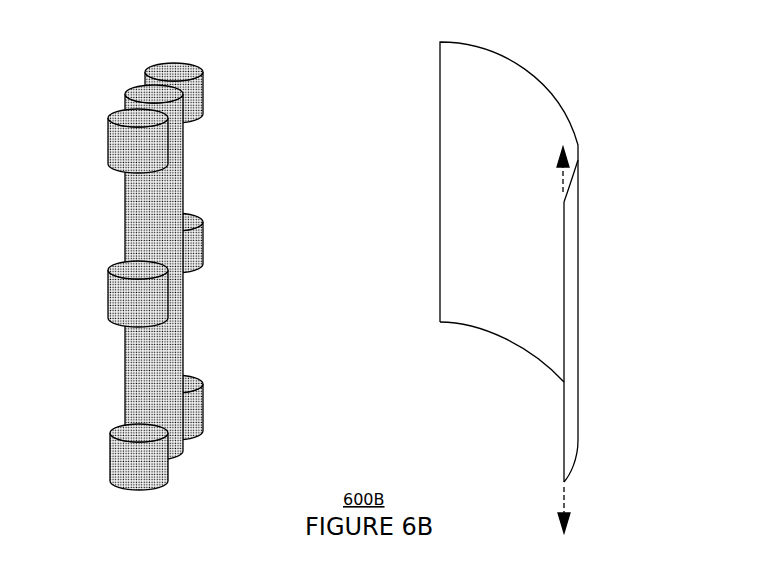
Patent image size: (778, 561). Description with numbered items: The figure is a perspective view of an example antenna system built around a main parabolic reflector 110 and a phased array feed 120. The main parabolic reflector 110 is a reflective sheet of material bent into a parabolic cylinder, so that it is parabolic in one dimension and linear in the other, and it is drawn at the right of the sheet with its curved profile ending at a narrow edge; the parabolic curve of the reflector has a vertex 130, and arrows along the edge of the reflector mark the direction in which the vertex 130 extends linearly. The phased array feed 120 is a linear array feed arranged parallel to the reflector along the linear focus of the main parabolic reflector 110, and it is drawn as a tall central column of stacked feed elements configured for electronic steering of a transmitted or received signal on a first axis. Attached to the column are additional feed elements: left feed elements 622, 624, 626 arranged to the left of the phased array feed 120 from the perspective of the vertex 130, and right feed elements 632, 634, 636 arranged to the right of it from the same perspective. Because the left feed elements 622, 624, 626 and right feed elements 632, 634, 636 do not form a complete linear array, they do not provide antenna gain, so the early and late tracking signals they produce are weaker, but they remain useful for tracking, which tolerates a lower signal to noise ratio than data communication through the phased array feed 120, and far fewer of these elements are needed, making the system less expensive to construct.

The main parabolic reflector 110 is at (577, 128).
The phased array feed 120 is at (173, 460).
The vertex 130 is at (565, 492).
The left feed element 622 is at (109, 137).
The left feed element 624 is at (109, 303).
The left feed element 626 is at (109, 470).
The right feed element 632 is at (162, 64).
The right feed element 634 is at (204, 268).
The right feed element 636 is at (204, 428).